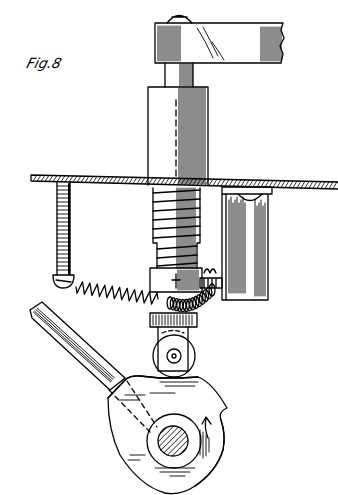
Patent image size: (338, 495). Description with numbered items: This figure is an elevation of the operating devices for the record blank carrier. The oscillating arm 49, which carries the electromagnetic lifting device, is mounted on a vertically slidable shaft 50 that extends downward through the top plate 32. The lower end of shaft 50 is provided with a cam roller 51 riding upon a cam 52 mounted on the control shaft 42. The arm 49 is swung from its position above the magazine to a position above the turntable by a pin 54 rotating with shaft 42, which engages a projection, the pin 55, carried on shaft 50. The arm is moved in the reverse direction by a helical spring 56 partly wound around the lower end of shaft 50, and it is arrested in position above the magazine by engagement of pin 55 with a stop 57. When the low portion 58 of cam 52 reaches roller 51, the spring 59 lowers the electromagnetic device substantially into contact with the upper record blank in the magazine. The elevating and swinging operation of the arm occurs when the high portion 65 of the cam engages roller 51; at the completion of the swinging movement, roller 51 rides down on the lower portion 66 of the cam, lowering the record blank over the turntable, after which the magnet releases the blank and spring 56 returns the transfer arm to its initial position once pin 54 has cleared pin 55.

The oscillating arm 49 is at (226, 33).
The vertically slidable shaft 50 is at (187, 79).
The top plate 32 is at (91, 176).
The spring 59 is at (153, 220).
The helical spring 56 is at (100, 286).
The pin 55 is at (213, 277).
The stop 57 is at (258, 275).
The pin 54 is at (90, 345).
The cam roller 51 is at (194, 358).
The cam 52 is at (168, 428).
The lower portion of cam 66 is at (212, 388).
The high portion of cam 65 is at (108, 404).
The low portion of cam 58 is at (222, 463).
The control shaft 42 is at (160, 444).